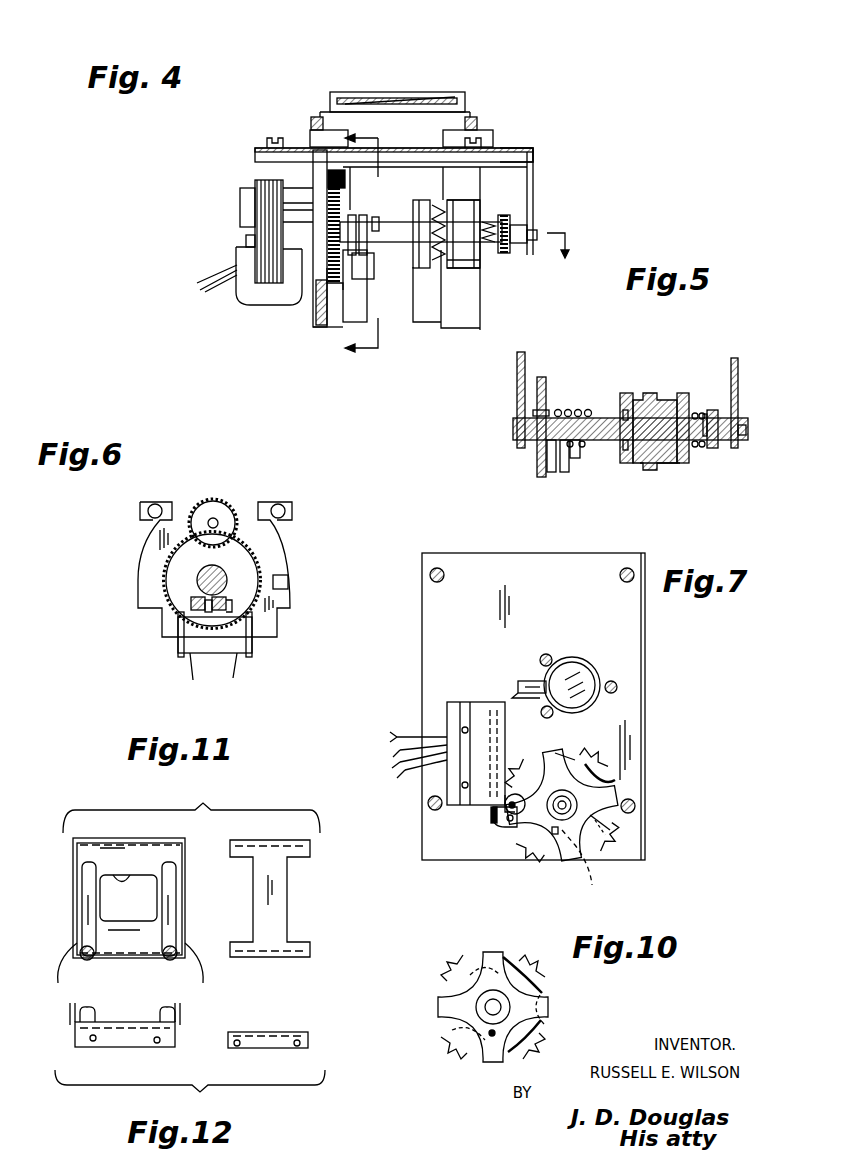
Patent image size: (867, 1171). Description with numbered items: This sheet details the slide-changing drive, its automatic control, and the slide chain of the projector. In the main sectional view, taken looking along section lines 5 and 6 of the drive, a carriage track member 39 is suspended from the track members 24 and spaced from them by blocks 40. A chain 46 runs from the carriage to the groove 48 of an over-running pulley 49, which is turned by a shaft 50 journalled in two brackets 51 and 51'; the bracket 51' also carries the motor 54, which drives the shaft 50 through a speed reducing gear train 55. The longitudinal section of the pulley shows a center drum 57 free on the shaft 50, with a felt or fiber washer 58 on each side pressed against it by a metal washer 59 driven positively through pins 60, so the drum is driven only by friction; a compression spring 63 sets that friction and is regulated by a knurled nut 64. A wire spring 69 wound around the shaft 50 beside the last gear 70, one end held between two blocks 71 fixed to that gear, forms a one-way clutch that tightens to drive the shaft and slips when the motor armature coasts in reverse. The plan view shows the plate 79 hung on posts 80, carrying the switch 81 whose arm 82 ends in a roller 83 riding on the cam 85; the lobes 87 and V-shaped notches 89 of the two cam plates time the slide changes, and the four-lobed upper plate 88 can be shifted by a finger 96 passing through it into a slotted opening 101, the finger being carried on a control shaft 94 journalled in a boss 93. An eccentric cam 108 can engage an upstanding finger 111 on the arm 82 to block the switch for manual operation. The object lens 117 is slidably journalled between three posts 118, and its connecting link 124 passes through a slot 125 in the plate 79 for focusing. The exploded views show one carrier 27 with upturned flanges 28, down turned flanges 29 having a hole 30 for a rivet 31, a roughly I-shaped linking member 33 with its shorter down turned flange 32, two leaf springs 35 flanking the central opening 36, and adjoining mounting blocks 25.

In FIG. 4, the section line 5 is at (438, 254).
In FIG. 4, the section line 6 is at (373, 243).
In FIG. 4, the track members 24 is at (465, 133).
In FIG. 4, the mounting block 25 is at (480, 125).
In FIG. 4, the carrier 27 is at (318, 117).
In FIG. 12, the carrier 27 is at (135, 1022).
In FIG. 12, the upturned flanges 28 is at (70, 1010).
In FIG. 12, the down turned flanges 29 is at (112, 1037).
In FIG. 12, the hole 30 is at (90, 1038).
In FIG. 4, the rivet 31 is at (340, 112).
In FIG. 12, the down turned flange 32 is at (272, 1043).
In FIG. 4, the linking member 33 is at (335, 115).
In FIG. 11, the linking member 33 is at (275, 918).
In FIG. 12, the linking member 33 is at (260, 1032).
In FIG. 4, the leaf springs 35 is at (405, 92).
In FIG. 11, the leaf springs 35 is at (82, 882).
In FIG. 11, the central opening 36 is at (124, 880).
In FIG. 4, the carriage track member 39 is at (500, 150).
In FIG. 4, the blocks 40 is at (493, 135).
In FIG. 4, the chain 46 is at (470, 225).
In FIG. 4, the groove 48 is at (423, 266).
In FIG. 5, the groove 48 is at (650, 393).
In FIG. 4, the over-running pulley 49 is at (455, 272).
In FIG. 5, the over-running pulley 49 is at (663, 462).
In FIG. 4, the shaft 50 is at (393, 232).
In FIG. 5, the shaft 50 is at (592, 418).
In FIG. 4, the bracket 51 is at (557, 157).
In FIG. 5, the bracket 51 is at (756, 403).
In FIG. 4, the bracket 51' is at (258, 238).
In FIG. 5, the bracket 51' is at (479, 402).
In FIG. 6, the bracket 51' is at (243, 569).
In FIG. 4, the motor 54 is at (256, 218).
In FIG. 6, the motor 54 is at (255, 630).
In FIG. 4, the speed reducing gear train 55 is at (339, 200).
In FIG. 6, the speed reducing gear train 55 is at (150, 572).
In FIG. 5, the center drum 57 is at (626, 395).
In FIG. 4, the felt or fiber washer 58 is at (476, 268).
In FIG. 5, the felt or fiber washer 58 is at (680, 393).
In FIG. 4, the metal washer 59 is at (436, 212).
In FIG. 5, the metal washer 59 is at (694, 410).
In FIG. 5, the pins 60 is at (618, 415).
In FIG. 4, the compression spring 63 is at (533, 180).
In FIG. 5, the compression spring 63 is at (700, 412).
In FIG. 4, the knurled nut 64 is at (506, 252).
In FIG. 5, the knurled nut 64 is at (712, 410).
In FIG. 4, the wire spring 69 is at (370, 246).
In FIG. 5, the wire spring 69 is at (573, 410).
In FIG. 6, the wire spring 69 is at (228, 577).
In FIG. 4, the last gear 70 is at (330, 282).
In FIG. 5, the last gear 70 is at (537, 462).
In FIG. 6, the last gear 70 is at (190, 600).
In FIG. 4, the blocks 71 is at (340, 292).
In FIG. 5, the blocks 71 is at (550, 472).
In FIG. 6, the blocks 71 is at (200, 612).
In FIG. 7, the plate 79 is at (432, 645).
In FIG. 7, the posts 80 is at (440, 570).
In FIG. 7, the switch 81 is at (448, 718).
In FIG. 7, the arm 82 is at (507, 830).
In FIG. 7, the roller 83 is at (518, 826).
In FIG. 7, the cam 85 is at (610, 774).
In FIG. 7, the lobes 87 is at (578, 768).
In FIG. 10, the lobes 87 is at (540, 985).
In FIG. 7, the upper plate 88 is at (598, 822).
In FIG. 10, the upper plate 88 is at (470, 990).
In FIG. 7, the V-shaped notches 89 is at (538, 778).
In FIG. 10, the V-shaped notches 89 is at (530, 1030).
In FIG. 7, the boss 93 is at (580, 799).
In FIG. 7, the control shaft 94 is at (600, 825).
In FIG. 7, the finger 96 is at (556, 834).
In FIG. 10, the finger 96 is at (490, 1037).
In FIG. 7, the slotted opening 101 is at (578, 840).
In FIG. 10, the slotted opening 101 is at (455, 1030).
In FIG. 7, the eccentric cam 108 is at (508, 798).
In FIG. 7, the upstanding finger 111 is at (495, 812).
In FIG. 7, the object lens 117 is at (592, 674).
In FIG. 7, the posts 118 is at (547, 654).
In FIG. 7, the connecting link 124 is at (532, 681).
In FIG. 7, the slot 125 is at (530, 693).